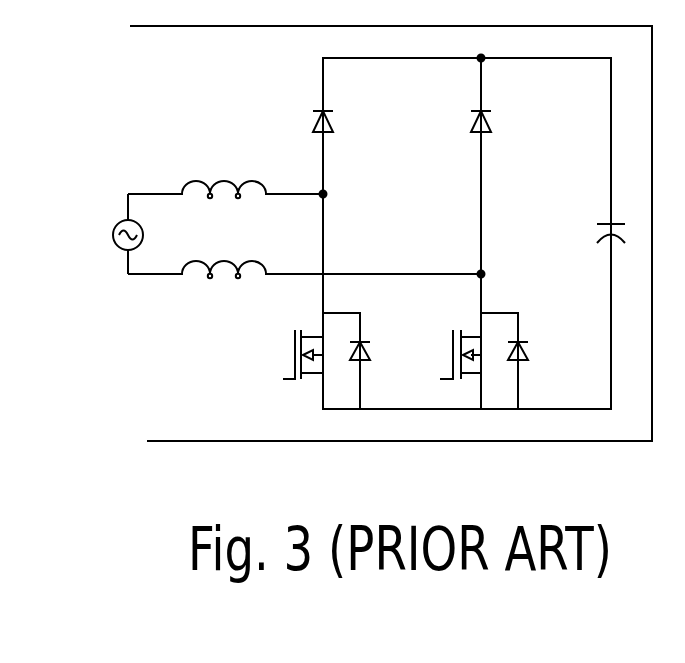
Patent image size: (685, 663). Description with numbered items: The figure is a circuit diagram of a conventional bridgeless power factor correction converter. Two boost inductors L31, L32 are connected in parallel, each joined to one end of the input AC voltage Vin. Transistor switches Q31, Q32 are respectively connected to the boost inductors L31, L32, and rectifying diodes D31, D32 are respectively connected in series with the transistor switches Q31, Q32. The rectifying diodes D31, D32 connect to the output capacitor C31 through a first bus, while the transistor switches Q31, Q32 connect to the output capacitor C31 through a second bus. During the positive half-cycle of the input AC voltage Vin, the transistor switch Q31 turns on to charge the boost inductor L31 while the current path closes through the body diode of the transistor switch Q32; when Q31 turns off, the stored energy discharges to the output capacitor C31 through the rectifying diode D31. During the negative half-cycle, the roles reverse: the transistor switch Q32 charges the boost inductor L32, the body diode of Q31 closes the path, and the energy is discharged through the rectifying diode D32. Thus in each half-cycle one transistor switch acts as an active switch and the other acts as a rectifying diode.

The input AC voltage Vin is at (105, 234).
The boost inductor L31 is at (225, 172).
The boost inductor L32 is at (304, 251).
The rectifying diode D31 is at (350, 126).
The rectifying diode D32 is at (509, 166).
The output capacitor C31 is at (585, 233).
The transistor switch Q31 is at (306, 301).
The transistor switch Q32 is at (465, 341).